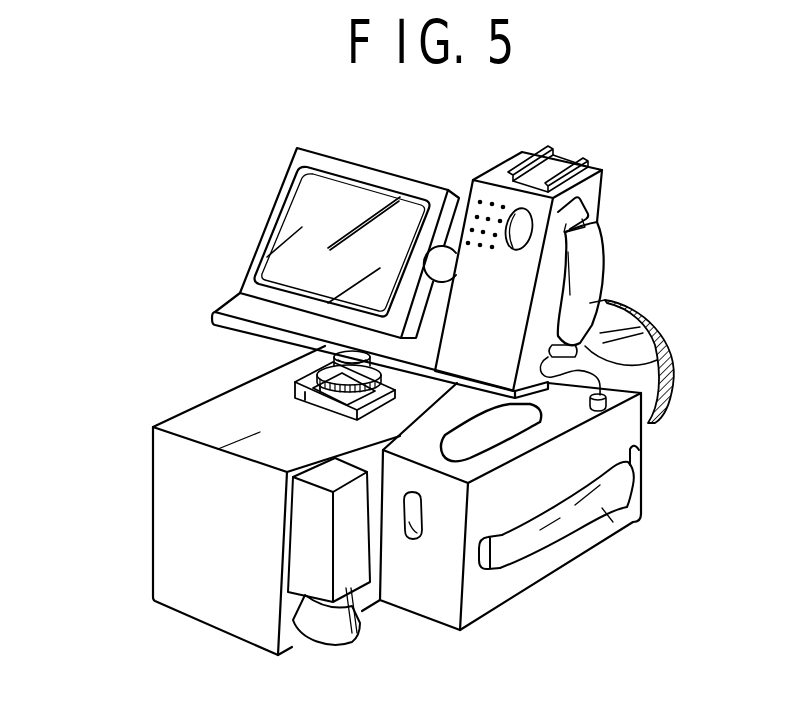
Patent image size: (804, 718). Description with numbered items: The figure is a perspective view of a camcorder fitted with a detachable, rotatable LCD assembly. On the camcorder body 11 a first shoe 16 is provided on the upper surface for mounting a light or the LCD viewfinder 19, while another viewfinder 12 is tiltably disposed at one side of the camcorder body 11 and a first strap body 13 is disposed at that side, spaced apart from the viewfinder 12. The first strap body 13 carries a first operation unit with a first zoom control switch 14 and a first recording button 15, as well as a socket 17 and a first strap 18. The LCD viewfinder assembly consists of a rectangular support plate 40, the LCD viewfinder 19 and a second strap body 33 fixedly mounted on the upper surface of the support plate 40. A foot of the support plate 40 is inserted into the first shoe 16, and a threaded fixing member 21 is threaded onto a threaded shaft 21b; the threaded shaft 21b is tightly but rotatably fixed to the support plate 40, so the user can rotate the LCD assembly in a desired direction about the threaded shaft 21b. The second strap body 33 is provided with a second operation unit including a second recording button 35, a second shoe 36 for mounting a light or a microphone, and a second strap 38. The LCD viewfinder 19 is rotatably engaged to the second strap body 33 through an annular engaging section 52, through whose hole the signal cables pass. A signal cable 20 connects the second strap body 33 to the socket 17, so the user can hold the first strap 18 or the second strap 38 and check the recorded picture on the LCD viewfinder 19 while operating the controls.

The camcorder body 11 is at (190, 487).
The viewfinder 12 is at (308, 552).
The first strap body 13 is at (612, 432).
The first zoom control switch 14 is at (492, 431).
The first recording button 15 is at (415, 540).
The first shoe 16 is at (218, 449).
The socket 17 is at (640, 412).
The first strap 18 is at (637, 520).
The LCD viewfinder 19 is at (368, 172).
The signal cable 20 is at (667, 342).
The fixing member 21 is at (178, 414).
The threaded shaft 21b is at (310, 350).
The second strap body 33 is at (510, 320).
The second recording button 35 is at (600, 222).
The second shoe 36 is at (578, 150).
The second strap 38 is at (592, 272).
The support plate 40 is at (240, 328).
The annular engaging section 52 is at (457, 190).